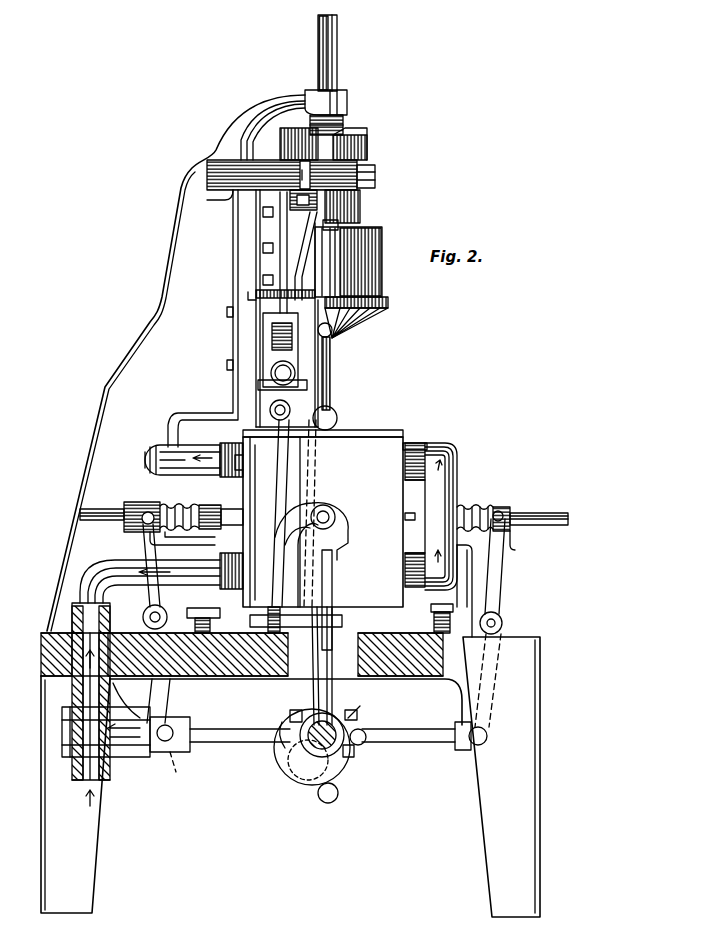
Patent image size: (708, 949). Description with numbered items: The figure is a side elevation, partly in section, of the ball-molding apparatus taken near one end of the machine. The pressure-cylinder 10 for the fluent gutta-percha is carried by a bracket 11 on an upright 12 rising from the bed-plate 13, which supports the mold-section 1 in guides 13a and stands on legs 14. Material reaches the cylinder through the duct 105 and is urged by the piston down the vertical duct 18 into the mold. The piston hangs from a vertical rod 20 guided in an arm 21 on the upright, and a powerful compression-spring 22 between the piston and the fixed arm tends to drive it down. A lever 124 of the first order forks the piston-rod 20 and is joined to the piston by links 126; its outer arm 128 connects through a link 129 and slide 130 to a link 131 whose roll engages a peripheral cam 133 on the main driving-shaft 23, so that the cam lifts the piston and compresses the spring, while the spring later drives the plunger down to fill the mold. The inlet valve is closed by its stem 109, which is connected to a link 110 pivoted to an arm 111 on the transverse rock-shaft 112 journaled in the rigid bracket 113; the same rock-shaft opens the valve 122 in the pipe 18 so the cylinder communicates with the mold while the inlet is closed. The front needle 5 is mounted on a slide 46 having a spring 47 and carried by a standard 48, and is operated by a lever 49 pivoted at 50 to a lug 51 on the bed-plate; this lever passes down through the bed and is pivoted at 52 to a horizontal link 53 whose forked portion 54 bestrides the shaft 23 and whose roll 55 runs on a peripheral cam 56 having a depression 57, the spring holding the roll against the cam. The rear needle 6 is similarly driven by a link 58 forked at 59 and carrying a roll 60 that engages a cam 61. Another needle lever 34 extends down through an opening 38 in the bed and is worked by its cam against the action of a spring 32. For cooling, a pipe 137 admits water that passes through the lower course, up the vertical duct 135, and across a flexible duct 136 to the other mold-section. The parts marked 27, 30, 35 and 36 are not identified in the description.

The mold-section 1 is at (323, 522).
The front needle 5 is at (415, 515).
The rear needle 6 is at (161, 524).
The pressure-cylinder 10 is at (380, 263).
The bracket 11 is at (280, 258).
The upright 12 is at (254, 410).
The bed-plate 13 is at (42, 654).
The guides 13a is at (431, 612).
The legs 14 is at (290, 777).
The vertical duct 18 is at (340, 435).
The vertical rod 20 is at (337, 44).
The arm 21 is at (303, 100).
The compression-spring 22 is at (343, 122).
The power-shaft 23 is at (312, 757).
The pin 27 is at (333, 507).
The lever 30 is at (293, 514).
The spring 32 is at (271, 620).
The lever 34 is at (332, 578).
The yoke 35 is at (340, 540).
The cross bar 36 is at (342, 622).
The opening 38 is at (333, 666).
The slide 46 is at (552, 513).
The spring 47 is at (468, 507).
The standard 48 is at (457, 594).
The lever 49 is at (494, 580).
The pivot 50 is at (500, 615).
The lug 51 is at (500, 635).
The pivot 52 is at (484, 742).
The horizontal link 53 is at (440, 740).
The forked portion 54 is at (288, 705).
The roll 55 is at (364, 731).
The peripheral cam 56 is at (355, 752).
The depression 57 is at (360, 716).
The link 58 is at (242, 740).
The fork 59 is at (361, 703).
The roll 60 is at (284, 722).
The cam 61 is at (278, 770).
The duct 105 is at (350, 223).
The valve stem 109 is at (340, 332).
The link 110 is at (320, 370).
The arm 111 is at (332, 385).
The rock-shaft 112 is at (270, 410).
The bracket 113 is at (268, 440).
The valve 122 is at (337, 416).
The lever 124 is at (367, 150).
The links 126 is at (367, 222).
The outer arm 128 is at (375, 178).
The link 129 is at (248, 296).
The slide 130 is at (300, 362).
The link 131 is at (292, 503).
The peripheral cam 133 is at (126, 719).
The vertical duct 135 is at (458, 472).
The flexible duct 136 is at (155, 477).
The pipe 137 is at (100, 560).